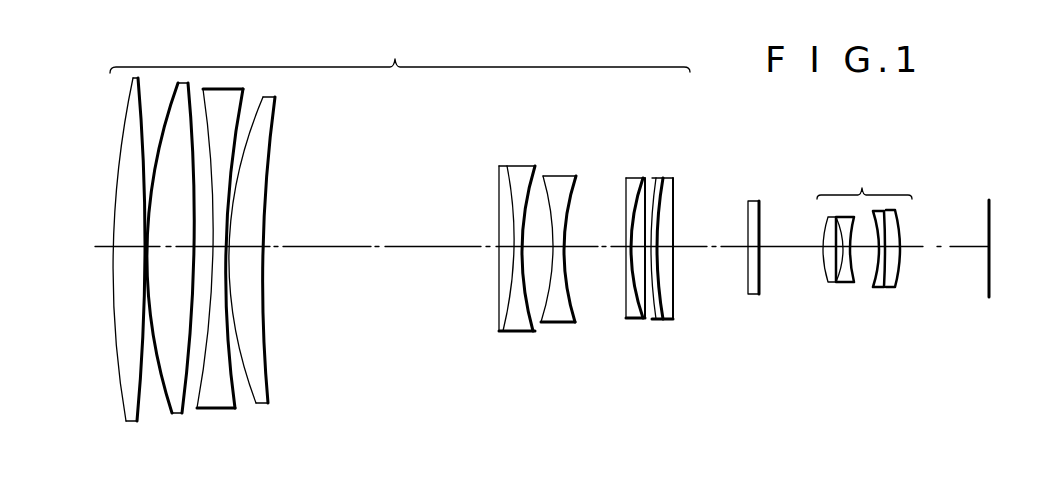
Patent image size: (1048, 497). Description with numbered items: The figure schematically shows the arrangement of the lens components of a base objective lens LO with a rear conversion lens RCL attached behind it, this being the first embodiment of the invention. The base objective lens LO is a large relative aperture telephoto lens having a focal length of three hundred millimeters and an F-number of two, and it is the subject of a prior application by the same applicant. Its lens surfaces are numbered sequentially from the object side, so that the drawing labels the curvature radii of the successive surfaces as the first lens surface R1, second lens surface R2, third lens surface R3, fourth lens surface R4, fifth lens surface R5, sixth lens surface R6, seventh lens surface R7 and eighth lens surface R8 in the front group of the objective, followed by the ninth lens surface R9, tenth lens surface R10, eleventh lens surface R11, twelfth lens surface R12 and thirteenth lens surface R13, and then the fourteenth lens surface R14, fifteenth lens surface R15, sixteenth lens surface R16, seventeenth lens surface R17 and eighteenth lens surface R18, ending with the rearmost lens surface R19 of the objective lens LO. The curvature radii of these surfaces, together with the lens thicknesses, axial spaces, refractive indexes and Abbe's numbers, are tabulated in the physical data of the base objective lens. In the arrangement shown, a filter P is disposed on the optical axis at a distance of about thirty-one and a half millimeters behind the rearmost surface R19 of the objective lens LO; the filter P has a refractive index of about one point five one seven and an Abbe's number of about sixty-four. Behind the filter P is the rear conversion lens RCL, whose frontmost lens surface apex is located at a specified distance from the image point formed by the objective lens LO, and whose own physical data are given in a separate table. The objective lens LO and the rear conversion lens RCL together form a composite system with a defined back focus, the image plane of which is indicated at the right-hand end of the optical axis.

The first lens surface R1 is at (119, 400).
The second lens surface R2 is at (137, 412).
The third lens surface R3 is at (172, 410).
The fourth lens surface R4 is at (183, 412).
The fifth lens surface R5 is at (199, 405).
The sixth lens surface R6 is at (235, 398).
The seventh lens surface R7 is at (259, 398).
The eighth lens surface R8 is at (266, 378).
The ninth lens surface R9 is at (497, 312).
The tenth lens surface R10 is at (502, 323).
The eleventh lens surface R11 is at (528, 318).
The twelfth lens surface R12 is at (545, 322).
The thirteenth lens surface R13 is at (575, 318).
The fourteenth lens surface R14 is at (625, 313).
The fifteenth lens surface R15 is at (638, 318).
The sixteenth lens surface R16 is at (650, 318).
The seventeenth lens surface R17 is at (667, 316).
The eighteenth lens surface R18 is at (665, 296).
The rearmost lens surface R19 is at (672, 281).
The base objective lens LO is at (394, 242).
The filter P is at (750, 200).
The rear conversion lens RCL is at (864, 223).